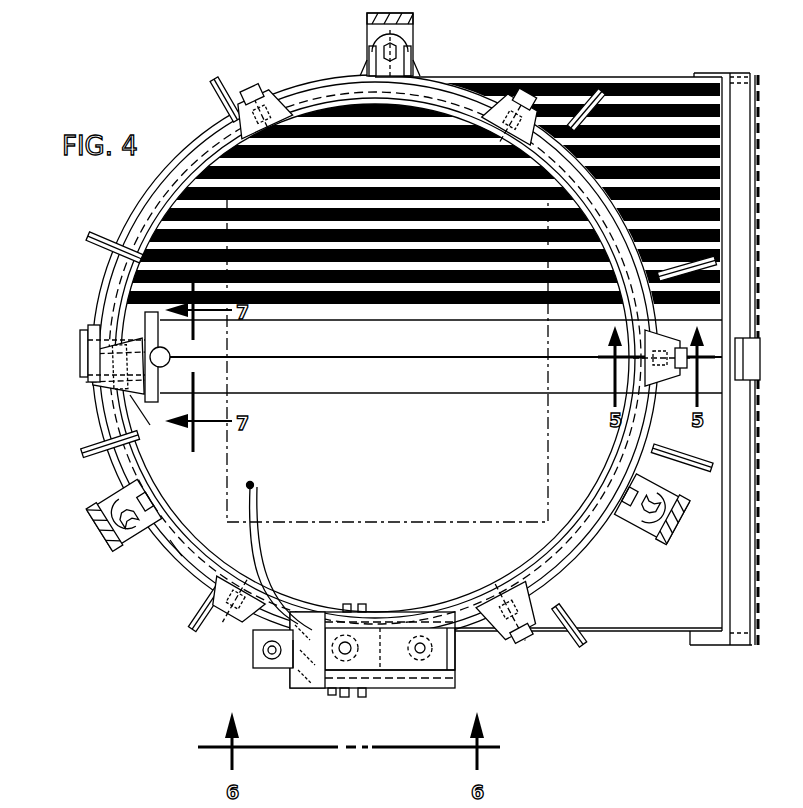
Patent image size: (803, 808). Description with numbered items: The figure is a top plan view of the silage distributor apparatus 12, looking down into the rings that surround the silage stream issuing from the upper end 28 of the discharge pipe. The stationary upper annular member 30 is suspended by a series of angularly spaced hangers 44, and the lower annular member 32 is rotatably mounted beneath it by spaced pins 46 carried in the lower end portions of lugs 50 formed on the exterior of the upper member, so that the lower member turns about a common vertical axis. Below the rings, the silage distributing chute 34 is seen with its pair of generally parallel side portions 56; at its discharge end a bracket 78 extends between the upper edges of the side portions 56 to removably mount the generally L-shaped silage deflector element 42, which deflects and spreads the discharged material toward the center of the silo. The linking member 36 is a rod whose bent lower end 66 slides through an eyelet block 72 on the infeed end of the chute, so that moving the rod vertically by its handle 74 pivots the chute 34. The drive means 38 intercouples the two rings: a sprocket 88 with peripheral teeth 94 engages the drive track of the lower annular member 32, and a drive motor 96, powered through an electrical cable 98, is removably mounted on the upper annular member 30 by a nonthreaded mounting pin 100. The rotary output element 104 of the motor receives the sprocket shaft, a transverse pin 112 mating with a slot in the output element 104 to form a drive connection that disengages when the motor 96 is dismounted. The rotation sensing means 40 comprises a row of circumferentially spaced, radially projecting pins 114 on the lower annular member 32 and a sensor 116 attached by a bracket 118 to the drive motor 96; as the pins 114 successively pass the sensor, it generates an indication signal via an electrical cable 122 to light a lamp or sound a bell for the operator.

The silage distributor apparatus 12 is at (463, 70).
The upper end of discharge pipe 28 is at (552, 478).
The upper annular member 30 is at (598, 541).
The lower annular member 32 is at (188, 548).
The silage distributing chute 34 is at (647, 638).
The linking member 36 is at (172, 351).
The drive means 38 is at (430, 692).
The rotation sensing means 40 is at (250, 647).
The silage deflector element 42 is at (748, 338).
The hangers 44 is at (88, 512).
The pins 46 is at (249, 88).
The lugs 50 is at (277, 92).
The side portions 56 is at (670, 76).
The lower end of rod 66 is at (80, 352).
The eyelet block 72 is at (100, 328).
The handle 74 is at (155, 428).
The bracket 78 is at (740, 648).
The sprocket 88 is at (300, 688).
The peripheral teeth 94 is at (346, 698).
The drive motor 96 is at (441, 690).
The electrical cable 98 is at (262, 560).
The mounting pin 100 is at (452, 652).
The rotary output element 104 is at (366, 610).
The transverse pin 112 is at (361, 700).
The pins 114 is at (217, 84).
The sensor 116 is at (258, 667).
The bracket 118 is at (292, 680).
The electrical cable 122 is at (244, 485).